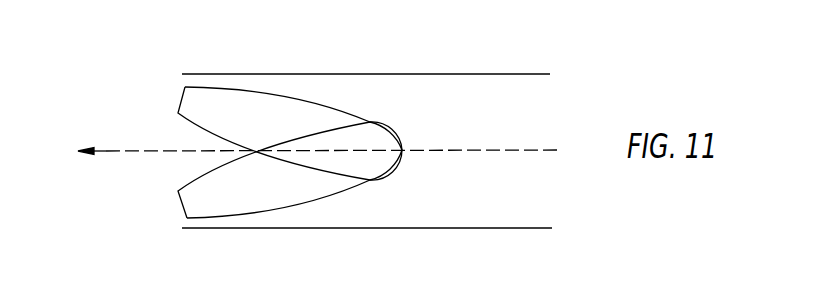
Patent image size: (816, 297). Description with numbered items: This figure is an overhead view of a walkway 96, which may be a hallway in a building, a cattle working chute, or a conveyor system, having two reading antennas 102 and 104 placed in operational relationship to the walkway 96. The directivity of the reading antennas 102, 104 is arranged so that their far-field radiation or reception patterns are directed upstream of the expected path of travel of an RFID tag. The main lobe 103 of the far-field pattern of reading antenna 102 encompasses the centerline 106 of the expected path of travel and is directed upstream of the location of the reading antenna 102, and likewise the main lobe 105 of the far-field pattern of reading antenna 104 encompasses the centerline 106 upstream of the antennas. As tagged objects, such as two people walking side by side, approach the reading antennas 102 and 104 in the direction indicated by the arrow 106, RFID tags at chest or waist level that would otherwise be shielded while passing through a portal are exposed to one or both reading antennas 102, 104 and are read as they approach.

The walkway 96 is at (527, 102).
The reading antenna 102 is at (183, 95).
The main lobe 103 is at (313, 113).
The reading antenna 104 is at (178, 195).
The main lobe 105 is at (290, 192).
The centerline 106 is at (117, 153).